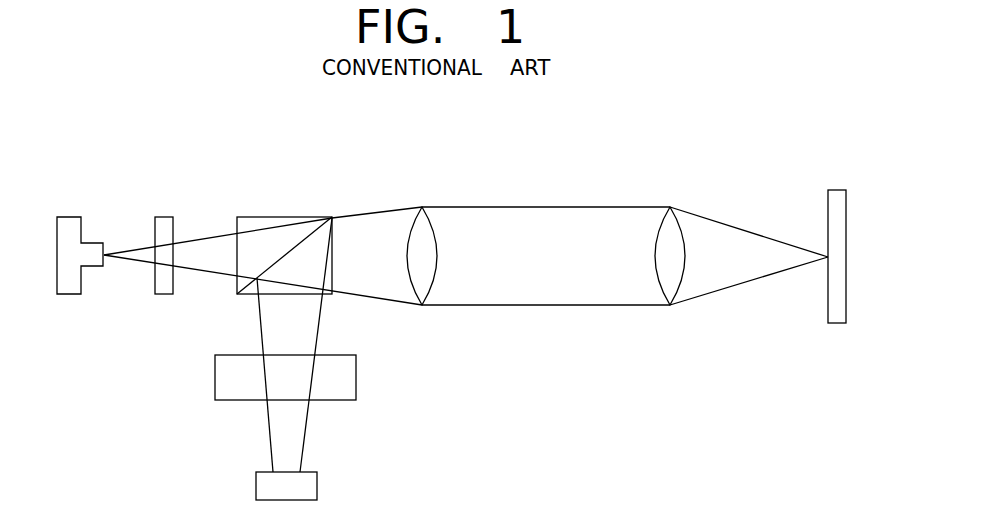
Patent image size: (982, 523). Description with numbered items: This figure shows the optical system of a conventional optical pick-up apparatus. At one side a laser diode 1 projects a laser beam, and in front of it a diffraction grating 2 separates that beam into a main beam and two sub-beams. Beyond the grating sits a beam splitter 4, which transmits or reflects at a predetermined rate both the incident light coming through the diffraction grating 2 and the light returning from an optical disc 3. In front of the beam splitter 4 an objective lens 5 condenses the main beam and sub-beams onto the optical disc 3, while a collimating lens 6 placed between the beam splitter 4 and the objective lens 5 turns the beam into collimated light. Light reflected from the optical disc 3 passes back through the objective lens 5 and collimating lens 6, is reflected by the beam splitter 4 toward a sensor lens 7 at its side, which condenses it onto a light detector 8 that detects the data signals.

The laser diode 1 is at (75, 215).
The diffraction grating 2 is at (164, 215).
The optical disc 3 is at (828, 200).
The beam splitter 4 is at (277, 215).
The objective lens 5 is at (677, 208).
The collimating lens 6 is at (418, 207).
The sensor lens 7 is at (357, 377).
The light detector 8 is at (317, 486).